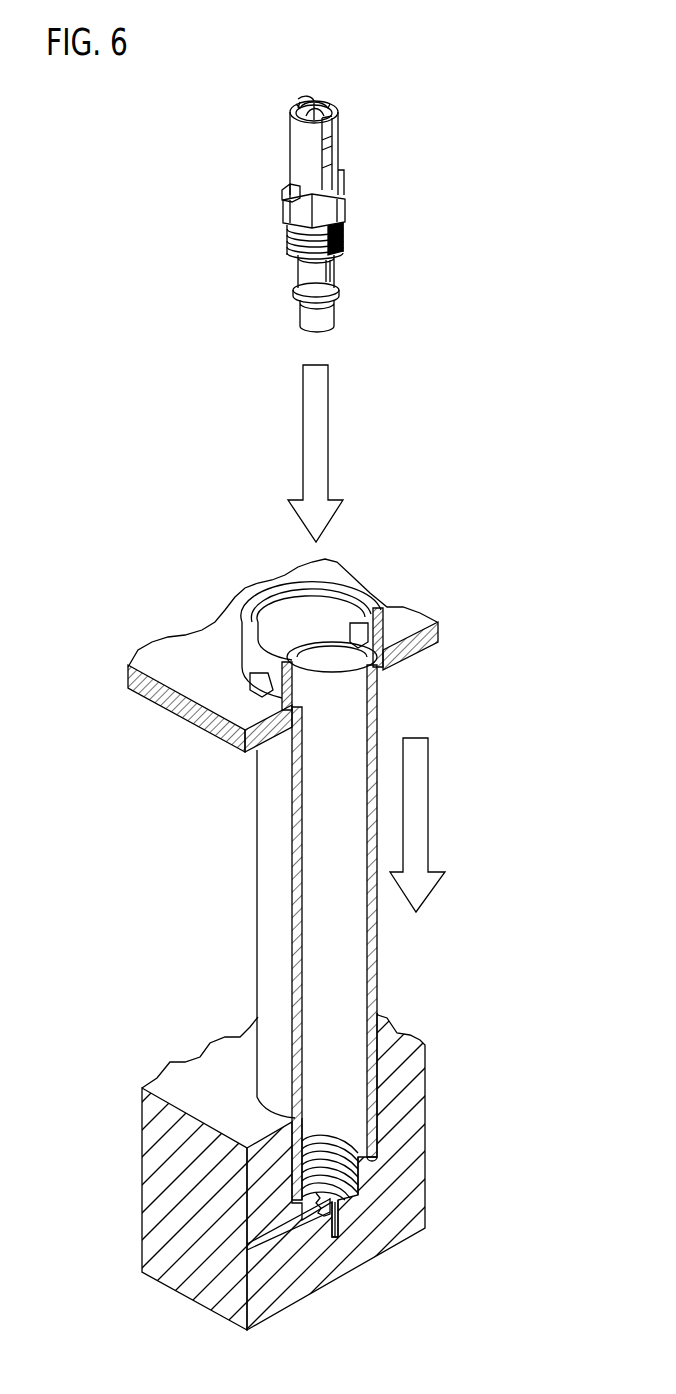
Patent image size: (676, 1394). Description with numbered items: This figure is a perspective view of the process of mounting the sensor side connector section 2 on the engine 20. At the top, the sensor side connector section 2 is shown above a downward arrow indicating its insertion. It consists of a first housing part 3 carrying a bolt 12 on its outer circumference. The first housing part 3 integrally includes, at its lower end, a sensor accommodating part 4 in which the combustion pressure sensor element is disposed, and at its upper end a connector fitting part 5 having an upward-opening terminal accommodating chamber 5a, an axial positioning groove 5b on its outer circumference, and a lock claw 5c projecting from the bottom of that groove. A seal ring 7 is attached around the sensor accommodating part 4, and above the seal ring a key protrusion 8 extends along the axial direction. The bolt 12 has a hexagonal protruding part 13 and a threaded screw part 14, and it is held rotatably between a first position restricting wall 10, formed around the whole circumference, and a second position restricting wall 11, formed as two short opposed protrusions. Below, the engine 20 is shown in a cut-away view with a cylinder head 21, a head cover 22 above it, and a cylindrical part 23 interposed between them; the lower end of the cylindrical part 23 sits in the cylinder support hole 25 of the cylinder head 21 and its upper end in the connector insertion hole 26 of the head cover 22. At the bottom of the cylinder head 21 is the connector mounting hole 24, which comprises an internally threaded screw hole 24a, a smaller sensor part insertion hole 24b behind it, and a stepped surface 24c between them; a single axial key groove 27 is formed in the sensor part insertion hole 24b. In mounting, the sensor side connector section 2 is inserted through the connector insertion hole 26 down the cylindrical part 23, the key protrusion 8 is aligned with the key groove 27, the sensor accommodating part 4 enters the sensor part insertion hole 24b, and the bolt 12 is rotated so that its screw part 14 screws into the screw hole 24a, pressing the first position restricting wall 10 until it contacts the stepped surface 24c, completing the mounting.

The sensor side connector section 2 is at (303, 191).
The connector fitting part 5 is at (315, 136).
The terminal accommodating chamber 5a is at (312, 100).
The positioning groove 5b is at (336, 120).
The lock claw 5c is at (338, 155).
The first housing part 3 is at (343, 192).
The second position restricting wall 11 is at (291, 197).
The hexagonal protruding part 13 is at (343, 217).
The bolt 12 is at (281, 231).
The screw part 14 is at (345, 236).
The first position restricting wall 10 is at (283, 246).
The key protrusion 8 is at (333, 270).
The seal ring 7 is at (295, 289).
The sensor accommodating part 4 is at (331, 312).
The engine 20 is at (329, 933).
The head cover 22 is at (440, 633).
The connector insertion hole 26 is at (333, 612).
The cylindrical part 23 is at (375, 950).
The cylinder head 21 is at (405, 1087).
The cylinder support hole 25 is at (387, 1130).
The connector mounting hole 24 is at (424, 1219).
The screw hole 24a is at (355, 1192).
The sensor part insertion hole 24b is at (350, 1228).
The stepped surface 24c is at (340, 1200).
The key groove 27 is at (343, 1232).